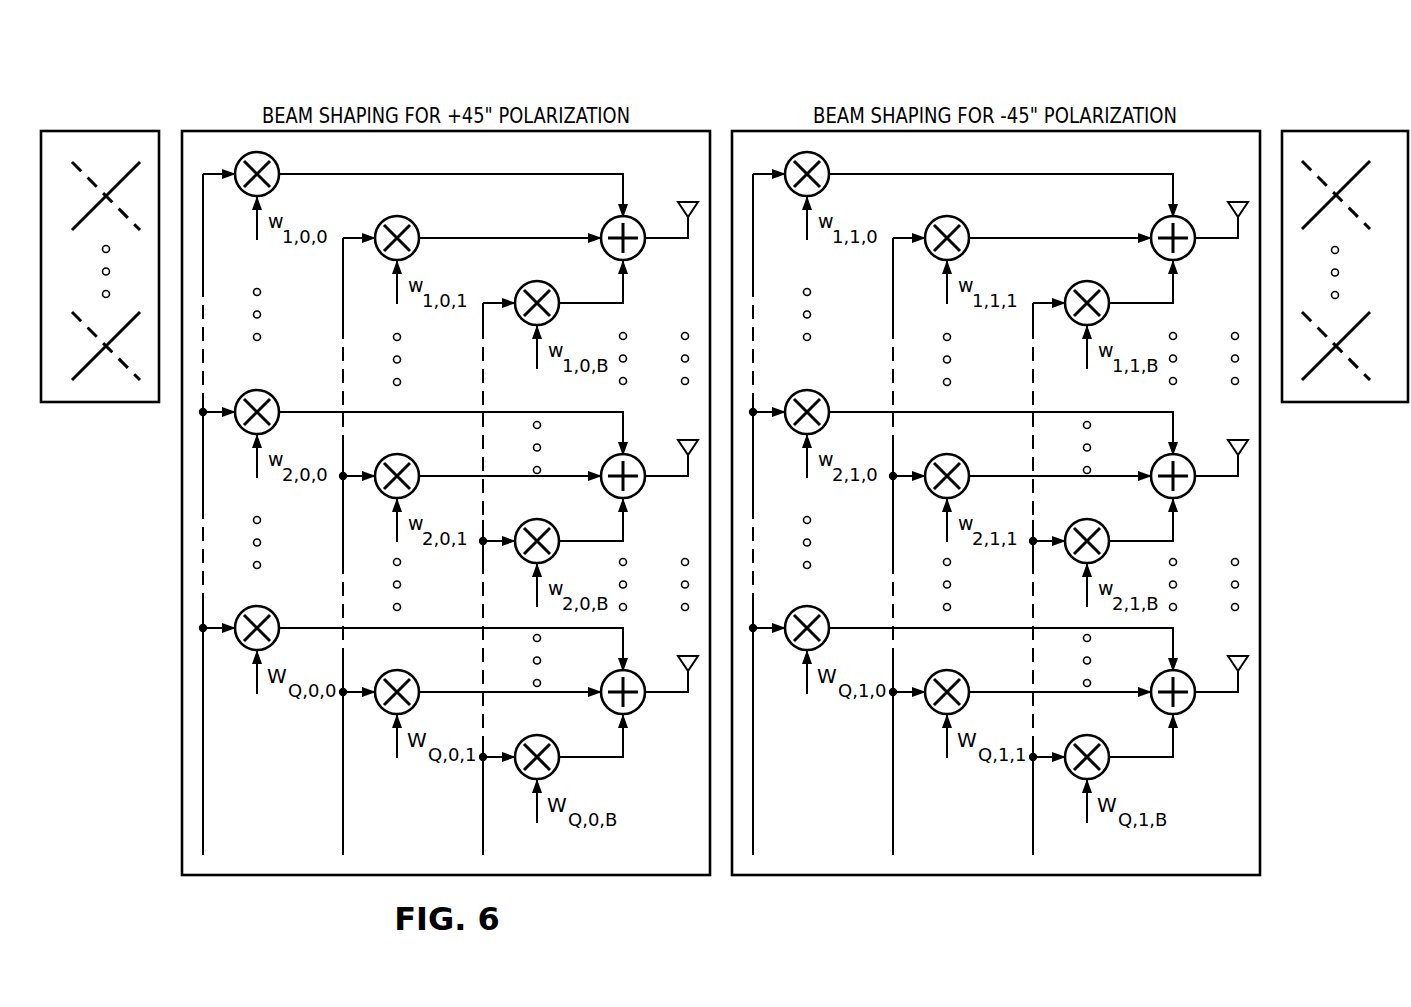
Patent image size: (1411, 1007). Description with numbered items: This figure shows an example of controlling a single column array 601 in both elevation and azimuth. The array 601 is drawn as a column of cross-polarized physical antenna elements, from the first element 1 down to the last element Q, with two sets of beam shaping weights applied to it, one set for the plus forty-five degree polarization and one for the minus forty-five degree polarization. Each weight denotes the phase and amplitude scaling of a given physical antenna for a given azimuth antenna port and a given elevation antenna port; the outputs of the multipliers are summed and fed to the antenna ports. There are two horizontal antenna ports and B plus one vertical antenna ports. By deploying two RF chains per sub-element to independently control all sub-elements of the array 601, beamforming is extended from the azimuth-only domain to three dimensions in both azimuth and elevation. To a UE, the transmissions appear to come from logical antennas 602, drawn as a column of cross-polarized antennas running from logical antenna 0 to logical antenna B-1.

The single column array 601 is at (100, 234).
The logical antennas 602 is at (1345, 256).
The first physical cross-polarized antenna element 1 is at (98, 185).
The Q-th physical cross-polarized antenna element Q is at (95, 335).
The first logical antenna 0 is at (1343, 185).
The last logical antenna B-1 is at (1352, 336).